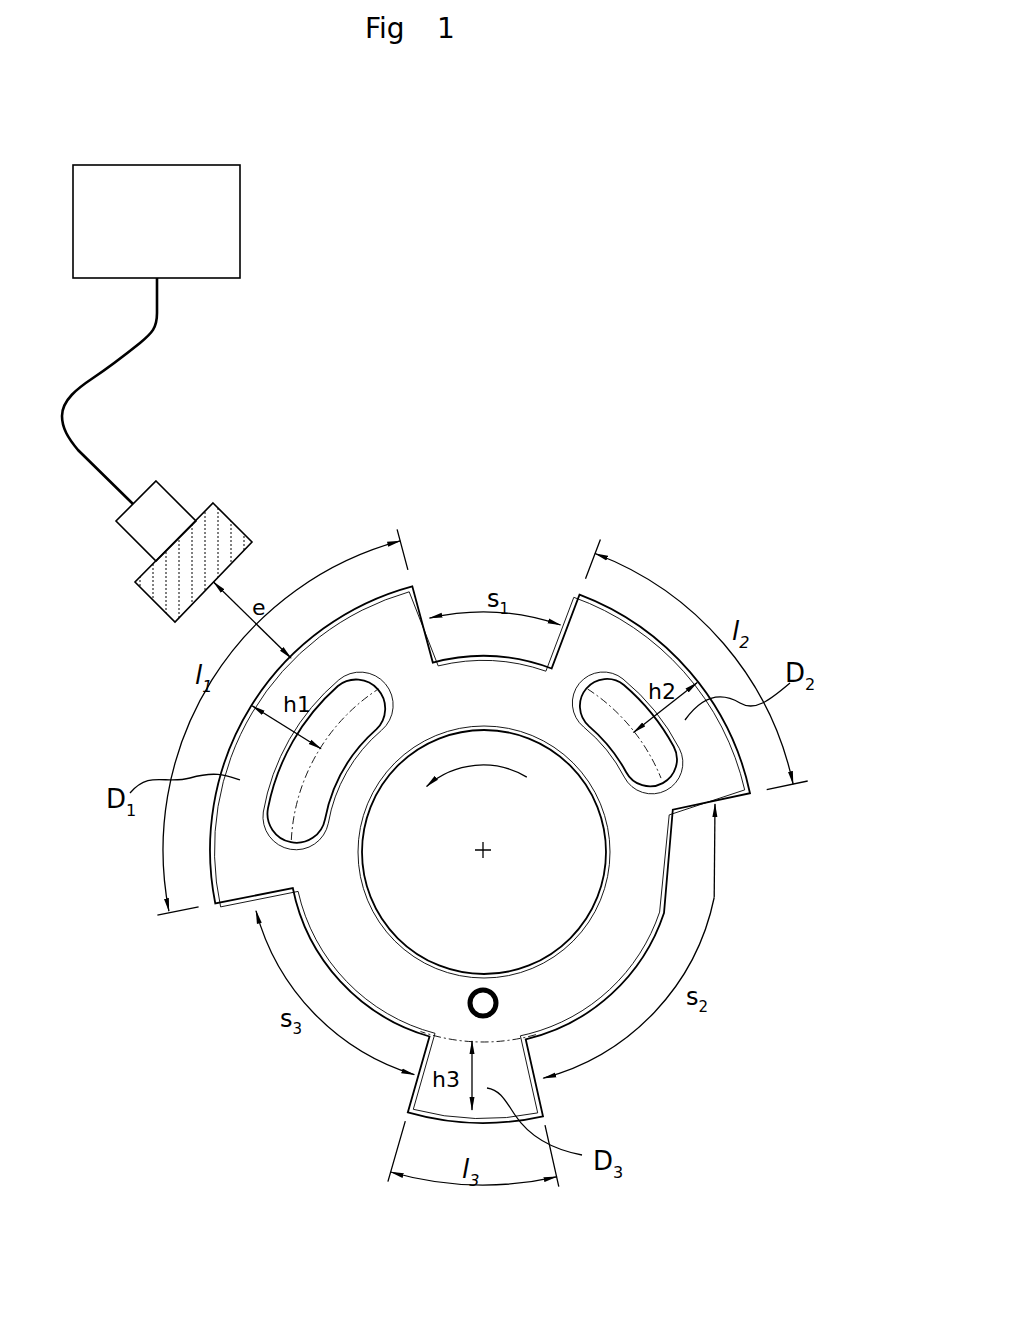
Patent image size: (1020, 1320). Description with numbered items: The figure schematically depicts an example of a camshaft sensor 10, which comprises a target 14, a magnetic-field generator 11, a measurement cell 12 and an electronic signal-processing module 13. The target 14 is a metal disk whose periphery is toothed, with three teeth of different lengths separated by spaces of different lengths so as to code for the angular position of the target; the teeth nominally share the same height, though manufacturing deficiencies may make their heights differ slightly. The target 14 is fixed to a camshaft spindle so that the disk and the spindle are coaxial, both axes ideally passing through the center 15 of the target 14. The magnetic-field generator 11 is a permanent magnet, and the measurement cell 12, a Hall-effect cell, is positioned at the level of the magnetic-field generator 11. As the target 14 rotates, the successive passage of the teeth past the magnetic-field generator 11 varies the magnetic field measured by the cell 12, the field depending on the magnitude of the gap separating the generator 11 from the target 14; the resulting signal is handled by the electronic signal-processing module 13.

The camshaft sensor 10 is at (487, 703).
The magnetic-field generator 11 is at (220, 543).
The measurement cell 12 is at (150, 525).
The electronic signal-processing module 13 is at (218, 247).
The target 14 is at (664, 913).
The center 15 is at (483, 850).